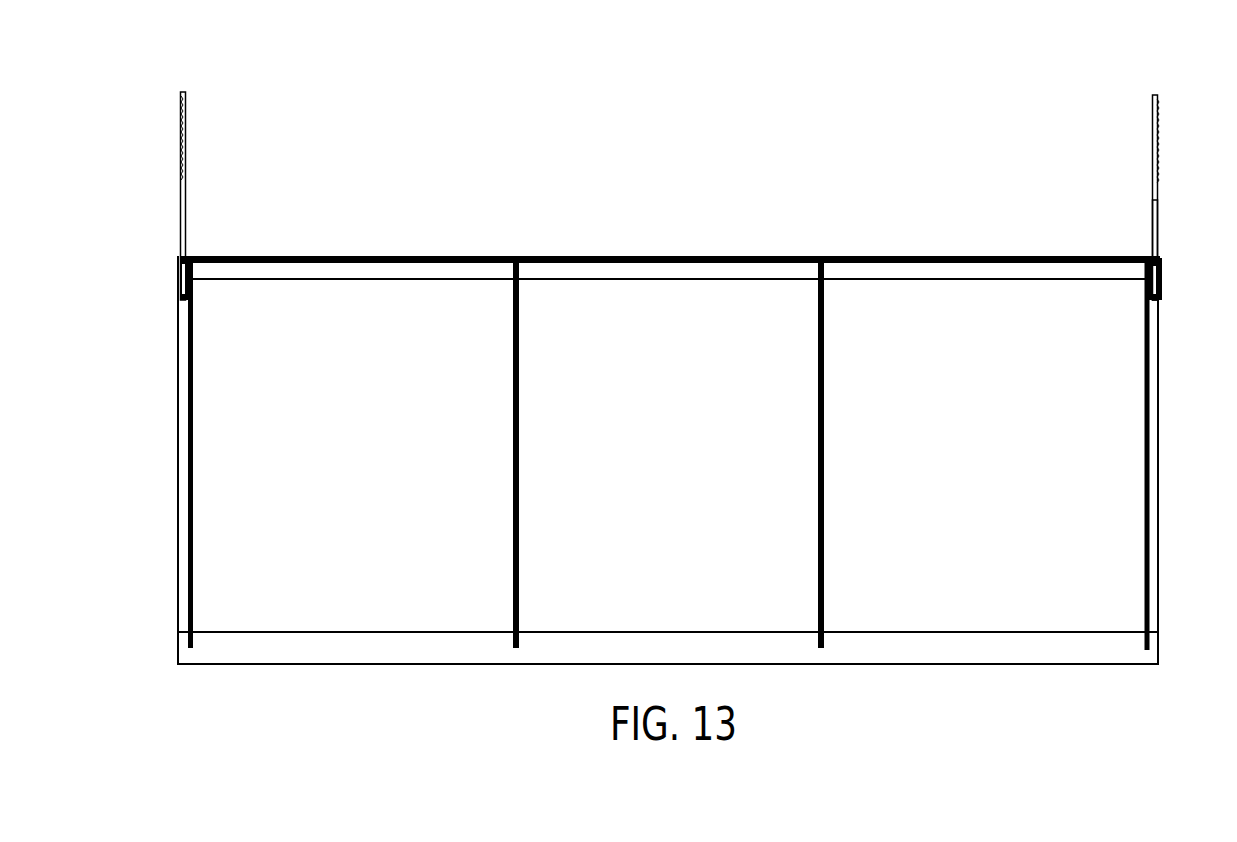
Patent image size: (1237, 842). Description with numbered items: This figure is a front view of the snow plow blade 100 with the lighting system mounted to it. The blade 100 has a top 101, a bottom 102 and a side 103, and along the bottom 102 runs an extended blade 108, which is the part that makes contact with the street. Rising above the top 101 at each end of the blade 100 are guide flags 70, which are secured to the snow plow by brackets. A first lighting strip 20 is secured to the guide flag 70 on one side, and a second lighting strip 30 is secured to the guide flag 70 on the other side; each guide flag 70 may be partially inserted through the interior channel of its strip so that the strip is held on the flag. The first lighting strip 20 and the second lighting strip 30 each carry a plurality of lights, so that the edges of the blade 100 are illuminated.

The first lighting strip 20 is at (186, 143).
The second lighting strip 30 is at (1158, 143).
The guide flag 70 is at (1158, 225).
The blade 100 is at (683, 408).
The top 101 is at (938, 256).
The bottom 102 is at (352, 634).
The side 103 is at (178, 458).
The extended blade 108 is at (1013, 652).